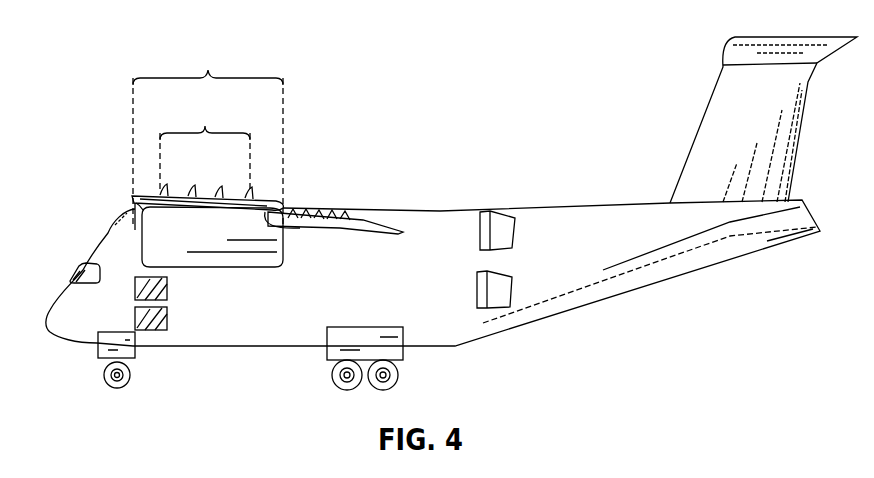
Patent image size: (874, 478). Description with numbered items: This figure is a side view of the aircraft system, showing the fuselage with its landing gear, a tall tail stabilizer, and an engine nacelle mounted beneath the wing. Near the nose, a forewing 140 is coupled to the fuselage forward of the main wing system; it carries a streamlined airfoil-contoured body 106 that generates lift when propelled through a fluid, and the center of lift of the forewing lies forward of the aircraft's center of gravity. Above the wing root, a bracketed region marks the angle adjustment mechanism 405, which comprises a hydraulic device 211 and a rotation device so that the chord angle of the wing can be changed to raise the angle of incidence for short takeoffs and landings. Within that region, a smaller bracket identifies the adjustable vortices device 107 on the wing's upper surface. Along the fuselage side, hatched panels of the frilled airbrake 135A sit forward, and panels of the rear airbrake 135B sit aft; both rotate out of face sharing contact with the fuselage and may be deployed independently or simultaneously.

The angle adjustment mechanism 405 is at (208, 130).
The adjustable vortices device 107 is at (205, 143).
The hydraulic device 211 is at (137, 203).
The forewing 140 is at (267, 207).
The streamlined airfoil-contoured body 106 is at (360, 220).
The frilled airbrake 135A is at (153, 328).
The rear airbrake 135B is at (495, 298).